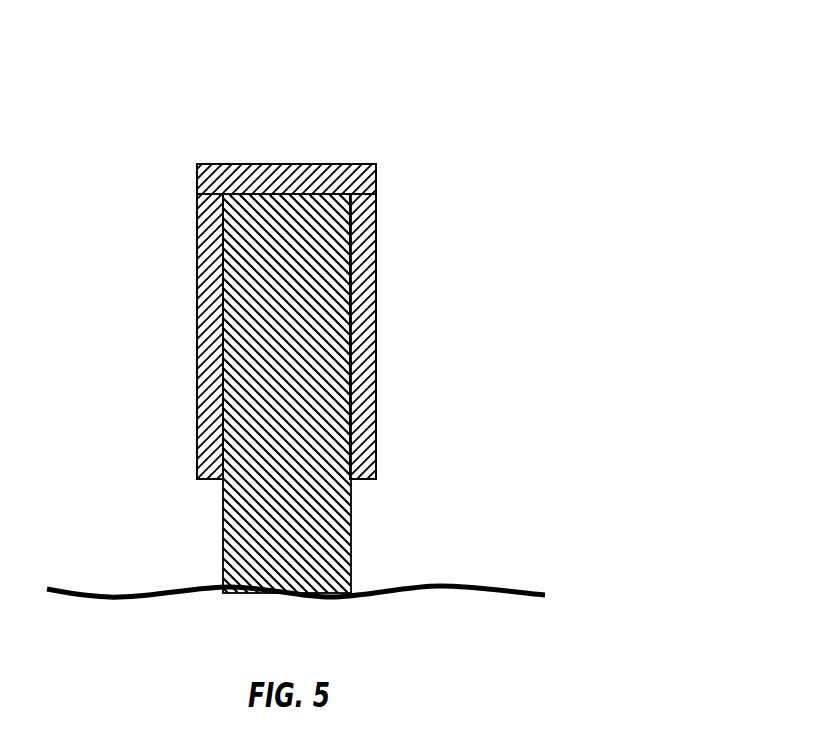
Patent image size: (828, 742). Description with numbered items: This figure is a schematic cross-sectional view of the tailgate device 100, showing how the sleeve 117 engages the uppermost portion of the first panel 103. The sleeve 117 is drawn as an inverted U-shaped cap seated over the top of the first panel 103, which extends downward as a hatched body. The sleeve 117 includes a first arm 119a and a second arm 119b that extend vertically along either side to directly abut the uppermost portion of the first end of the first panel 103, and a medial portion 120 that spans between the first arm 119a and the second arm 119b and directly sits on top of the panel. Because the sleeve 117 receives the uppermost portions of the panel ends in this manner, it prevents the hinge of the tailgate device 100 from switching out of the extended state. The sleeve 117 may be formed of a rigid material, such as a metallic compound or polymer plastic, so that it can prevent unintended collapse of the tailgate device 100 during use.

The tailgate device 100 is at (310, 306).
The first panel 103 is at (248, 538).
The sleeve 117 is at (263, 247).
The first arm 119a is at (203, 326).
The second arm 119b is at (370, 387).
The medial portion 120 is at (258, 174).